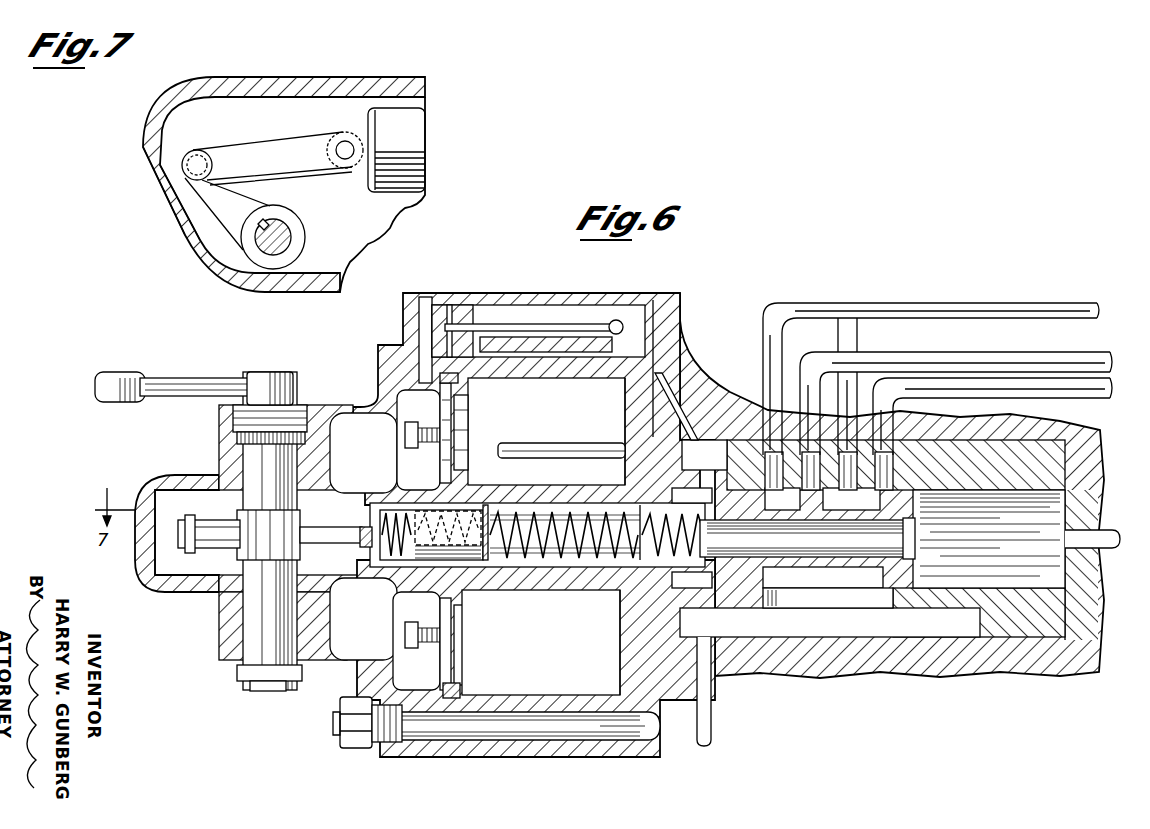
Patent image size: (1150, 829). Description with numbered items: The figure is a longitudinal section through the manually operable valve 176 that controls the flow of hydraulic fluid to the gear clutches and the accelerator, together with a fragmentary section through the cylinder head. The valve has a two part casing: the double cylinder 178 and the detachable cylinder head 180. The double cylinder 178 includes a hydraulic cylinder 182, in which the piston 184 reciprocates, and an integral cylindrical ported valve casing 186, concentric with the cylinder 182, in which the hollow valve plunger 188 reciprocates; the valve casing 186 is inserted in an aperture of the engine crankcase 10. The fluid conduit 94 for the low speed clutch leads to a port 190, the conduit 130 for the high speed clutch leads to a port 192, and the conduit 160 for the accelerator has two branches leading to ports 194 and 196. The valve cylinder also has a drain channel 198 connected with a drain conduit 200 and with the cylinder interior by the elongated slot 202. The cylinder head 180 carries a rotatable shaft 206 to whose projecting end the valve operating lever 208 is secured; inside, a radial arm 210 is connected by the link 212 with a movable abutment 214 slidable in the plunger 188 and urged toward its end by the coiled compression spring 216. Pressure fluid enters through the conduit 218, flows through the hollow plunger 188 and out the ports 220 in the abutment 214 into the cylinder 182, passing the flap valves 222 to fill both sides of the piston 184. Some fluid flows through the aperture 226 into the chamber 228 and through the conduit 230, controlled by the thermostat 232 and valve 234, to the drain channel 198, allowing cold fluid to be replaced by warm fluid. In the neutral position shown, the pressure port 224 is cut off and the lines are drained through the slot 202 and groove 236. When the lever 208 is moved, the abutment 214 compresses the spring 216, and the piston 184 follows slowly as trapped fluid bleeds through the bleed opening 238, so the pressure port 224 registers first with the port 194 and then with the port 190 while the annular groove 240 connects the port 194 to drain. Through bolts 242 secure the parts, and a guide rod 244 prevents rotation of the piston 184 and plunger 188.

In FIG. 6, the engine crankcase 10 is at (806, 676).
In FIG. 6, the fluid conduit 94 is at (1022, 358).
In FIG. 6, the conduit 130 is at (1022, 392).
In FIG. 6, the conduit 160 is at (1008, 305).
In FIG. 6, the manually operable valve 176 is at (372, 358).
In FIG. 6, the double cylinder 178 is at (602, 757).
In FIG. 7, the detachable cylinder head 180 is at (152, 190).
In FIG. 6, the detachable cylinder head 180 is at (218, 437).
In FIG. 6, the hydraulic cylinder 182 is at (622, 415).
In FIG. 6, the piston 184 is at (462, 688).
In FIG. 6, the cylindrical ported valve casing 186 is at (1033, 495).
In FIG. 7, the valve plunger 188 is at (363, 117).
In FIG. 6, the valve plunger 188 is at (541, 642).
In FIG. 6, the port 190 is at (810, 521).
In FIG. 6, the port 192 is at (915, 535).
In FIG. 6, the port 194 is at (748, 520).
In FIG. 6, the port 196 is at (840, 512).
In FIG. 6, the drain channel 198 is at (920, 625).
In FIG. 6, the drain conduit 200 is at (713, 733).
In FIG. 6, the elongated slot 202 is at (842, 600).
In FIG. 7, the rotatable shaft 206 is at (250, 243).
In FIG. 6, the rotatable shaft 206 is at (245, 602).
In FIG. 6, the valve operating lever 208 is at (205, 380).
In FIG. 7, the radial arm 210 is at (198, 214).
In FIG. 6, the radial arm 210 is at (172, 525).
In FIG. 7, the link 212 is at (268, 148).
In FIG. 6, the link 212 is at (228, 548).
In FIG. 6, the movable abutment 214 is at (530, 565).
In FIG. 6, the coiled compression spring 216 is at (546, 510).
In FIG. 6, the conduit 218 is at (1103, 528).
In FIG. 6, the ports 220 is at (372, 522).
In FIG. 6, the flap valves 222 is at (462, 432).
In FIG. 6, the pressure port 224 is at (826, 604).
In FIG. 6, the aperture 226 is at (577, 357).
In FIG. 6, the chamber 228 is at (586, 320).
In FIG. 6, the conduit 230 is at (680, 318).
In FIG. 6, the thermostat 232 is at (514, 324).
In FIG. 6, the valve 234 is at (618, 322).
In FIG. 6, the groove 236 is at (795, 600).
In FIG. 6, the bleed opening 238 is at (455, 400).
In FIG. 6, the annular groove 240 is at (650, 474).
In FIG. 6, the through bolts 242 is at (338, 722).
In FIG. 6, the guide rod 244 is at (540, 447).